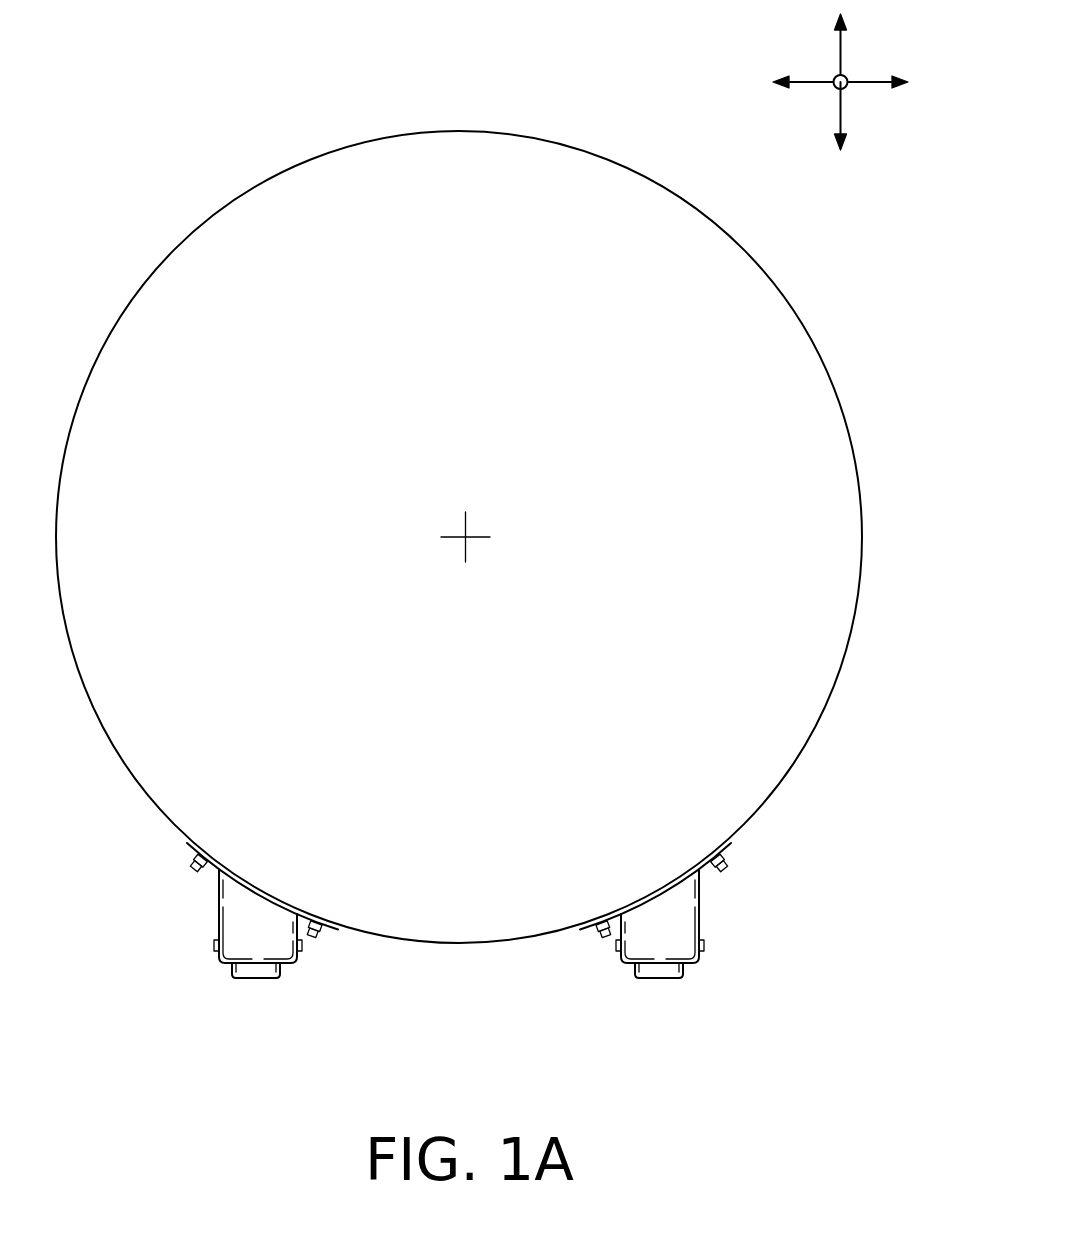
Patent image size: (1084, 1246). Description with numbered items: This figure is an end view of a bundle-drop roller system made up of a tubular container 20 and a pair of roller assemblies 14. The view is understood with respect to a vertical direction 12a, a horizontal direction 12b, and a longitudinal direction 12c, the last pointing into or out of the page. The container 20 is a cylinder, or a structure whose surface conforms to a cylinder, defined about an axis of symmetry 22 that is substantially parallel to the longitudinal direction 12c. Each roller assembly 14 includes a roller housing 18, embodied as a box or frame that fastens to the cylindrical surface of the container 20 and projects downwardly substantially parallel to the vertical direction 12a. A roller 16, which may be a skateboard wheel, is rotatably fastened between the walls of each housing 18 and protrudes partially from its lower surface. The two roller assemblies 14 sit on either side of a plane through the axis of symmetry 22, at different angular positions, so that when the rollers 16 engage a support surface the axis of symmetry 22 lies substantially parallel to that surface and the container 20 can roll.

The vertical direction 12a is at (838, 61).
The horizontal direction 12b is at (868, 81).
The longitudinal direction 12c is at (848, 88).
The roller assembly 14 is at (175, 944).
The roller 16 is at (258, 972).
The roller housing 18 is at (245, 937).
The container 20 is at (145, 282).
The axis of symmetry 22 is at (483, 537).